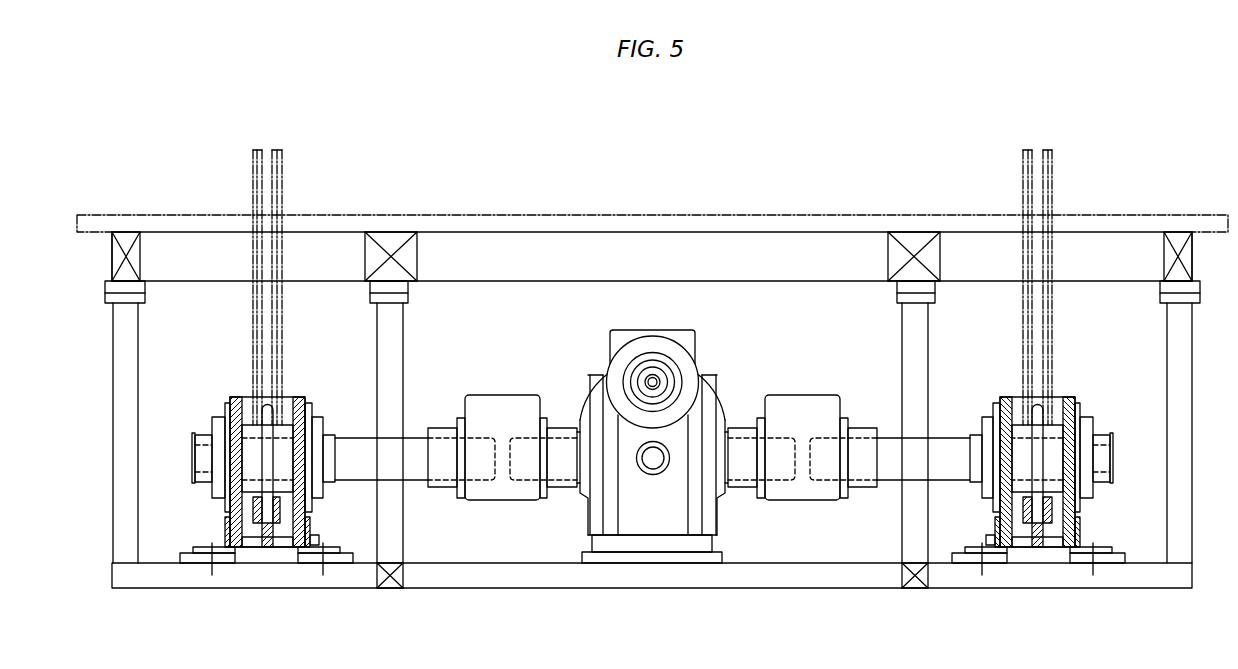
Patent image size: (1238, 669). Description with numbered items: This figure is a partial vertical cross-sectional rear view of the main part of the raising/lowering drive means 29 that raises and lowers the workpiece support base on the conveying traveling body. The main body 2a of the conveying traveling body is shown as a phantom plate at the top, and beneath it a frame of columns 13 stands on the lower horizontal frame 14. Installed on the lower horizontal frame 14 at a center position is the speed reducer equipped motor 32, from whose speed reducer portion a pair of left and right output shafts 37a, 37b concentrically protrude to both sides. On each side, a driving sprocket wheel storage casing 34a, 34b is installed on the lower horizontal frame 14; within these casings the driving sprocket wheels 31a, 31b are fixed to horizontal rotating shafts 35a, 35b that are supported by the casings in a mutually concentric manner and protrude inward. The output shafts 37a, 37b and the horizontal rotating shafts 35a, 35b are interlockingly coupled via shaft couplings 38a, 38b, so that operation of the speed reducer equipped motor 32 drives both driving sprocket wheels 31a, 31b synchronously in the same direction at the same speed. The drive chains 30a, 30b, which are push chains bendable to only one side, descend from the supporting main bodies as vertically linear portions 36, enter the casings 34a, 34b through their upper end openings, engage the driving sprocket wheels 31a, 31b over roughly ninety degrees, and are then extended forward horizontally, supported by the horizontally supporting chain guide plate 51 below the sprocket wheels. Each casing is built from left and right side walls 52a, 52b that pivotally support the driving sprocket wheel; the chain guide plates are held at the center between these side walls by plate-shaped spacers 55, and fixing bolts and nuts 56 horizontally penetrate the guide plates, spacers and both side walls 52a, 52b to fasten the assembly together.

The main body 2a is at (745, 242).
The support column 13 is at (128, 343).
The lower horizontal frame 14 is at (578, 583).
The raising/lowering drive means 29 is at (665, 318).
The drive chain 30a is at (250, 182).
The drive chain 30b is at (1056, 190).
The driving sprocket wheel 31a is at (268, 433).
The driving sprocket wheel 31b is at (1037, 453).
The speed reducer equipped motor 32 is at (628, 332).
The driving sprocket wheel storage casing 34a is at (290, 394).
The driving sprocket wheel storage casing 34b is at (1015, 394).
The horizontal rotating shaft 35a is at (393, 455).
The horizontal rotating shaft 35b is at (912, 452).
The vertically linear portion 36 is at (283, 168).
The output shaft 37a is at (560, 452).
The output shaft 37b is at (740, 447).
The shaft coupling 38a is at (505, 510).
The shaft coupling 38b is at (800, 507).
The horizontally supporting chain guide plate 51 is at (267, 550).
The side wall 52a is at (233, 462).
The side wall 52b is at (297, 462).
The plate-shaped spacer 55 is at (252, 548).
The fixing bolts and nuts 56 is at (283, 533).